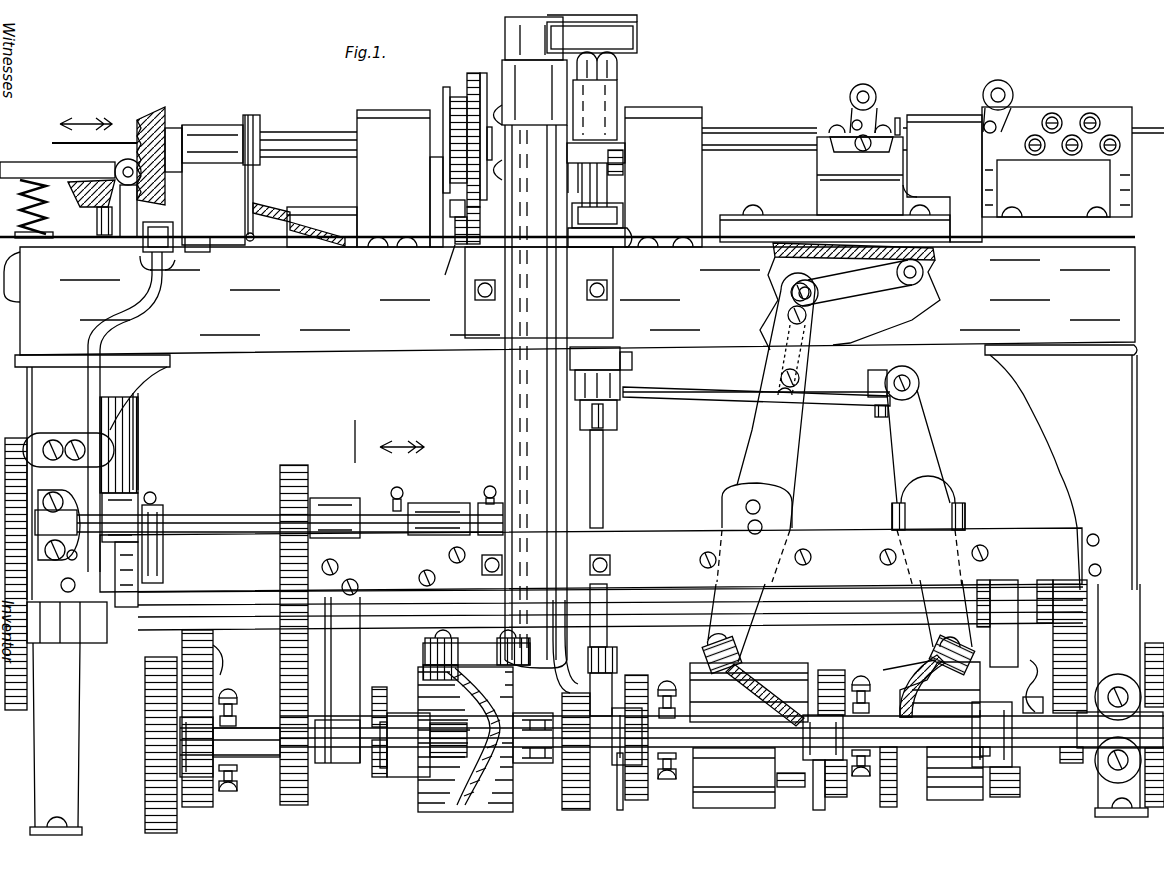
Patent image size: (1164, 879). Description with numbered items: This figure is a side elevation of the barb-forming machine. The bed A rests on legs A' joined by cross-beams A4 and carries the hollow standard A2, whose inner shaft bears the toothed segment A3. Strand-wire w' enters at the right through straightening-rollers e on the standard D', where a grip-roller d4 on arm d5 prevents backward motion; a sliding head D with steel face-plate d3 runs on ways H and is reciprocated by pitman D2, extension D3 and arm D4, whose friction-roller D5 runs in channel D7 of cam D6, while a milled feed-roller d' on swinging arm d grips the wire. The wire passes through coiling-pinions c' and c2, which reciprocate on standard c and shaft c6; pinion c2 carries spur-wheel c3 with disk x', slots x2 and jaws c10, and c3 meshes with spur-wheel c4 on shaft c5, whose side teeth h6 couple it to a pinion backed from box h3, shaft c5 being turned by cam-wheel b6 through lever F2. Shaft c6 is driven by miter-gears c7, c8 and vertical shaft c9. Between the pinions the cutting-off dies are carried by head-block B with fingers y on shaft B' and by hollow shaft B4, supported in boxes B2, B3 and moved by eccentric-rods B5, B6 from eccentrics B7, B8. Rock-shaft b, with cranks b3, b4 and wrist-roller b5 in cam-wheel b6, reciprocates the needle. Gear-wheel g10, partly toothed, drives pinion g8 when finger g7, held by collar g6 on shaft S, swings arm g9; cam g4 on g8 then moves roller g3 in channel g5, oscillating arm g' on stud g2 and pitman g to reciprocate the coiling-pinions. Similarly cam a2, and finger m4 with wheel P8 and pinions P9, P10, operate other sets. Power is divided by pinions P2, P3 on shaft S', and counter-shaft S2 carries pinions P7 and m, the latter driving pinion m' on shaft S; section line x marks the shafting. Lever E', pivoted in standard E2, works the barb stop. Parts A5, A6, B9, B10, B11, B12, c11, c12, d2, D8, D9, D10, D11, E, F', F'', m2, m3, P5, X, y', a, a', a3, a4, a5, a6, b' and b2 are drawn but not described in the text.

The frame or bed A is at (567, 296).
The legs A' is at (576, 472).
The hollow standard A2 is at (534, 342).
The toothed segment A3 is at (592, 34).
The cross-beams A4 is at (591, 561).
The lower bracket A5 is at (461, 647).
The frame bracket A6 is at (342, 620).
The head-block B is at (604, 107).
The shaft B' is at (614, 185).
The box B2 is at (600, 238).
The box B3 is at (628, 360).
The hollow shaft B4 is at (575, 385).
The eccentric-rod B5 is at (603, 462).
The eccentric-rod B6 is at (578, 672).
The eccentric B7 is at (617, 668).
The eccentric B8 is at (563, 778).
The hub B9 is at (627, 736).
The disc B10 is at (617, 790).
The gear B11 is at (648, 795).
The bolt B12 is at (670, 722).
The standard c is at (529, 177).
The coiling-pinion c' is at (616, 172).
The coiling-pinion c2 is at (452, 92).
The spur-wheel c3 is at (473, 129).
The spur-wheel c4 is at (459, 222).
The shaft c5 is at (378, 230).
The shaft c6 is at (293, 168).
The miter-gear c7 is at (170, 110).
The miter-gear c8 is at (91, 208).
The vertical shaft c9 is at (160, 460).
The jaws c10 is at (492, 145).
The bearing block c11 is at (944, 178).
The box c12 is at (213, 180).
The swinging arm d is at (863, 108).
The feed-roller d' is at (834, 112).
The post d2 is at (903, 116).
The face-plate d3 is at (861, 143).
The grip-roller d4 is at (984, 106).
The arm d5 is at (1013, 103).
The sliding head D is at (867, 176).
The standard D' is at (1057, 162).
The pitman D2 is at (840, 278).
The arm extension D3 is at (812, 306).
The arm D4 is at (761, 467).
The friction-roller D5 is at (706, 645).
The cam D6 is at (758, 695).
The cam channel D7 is at (773, 650).
The hub D8 is at (823, 762).
The disc D9 is at (825, 808).
The bolt D10 is at (868, 726).
The gear D11 is at (830, 670).
The straightening-rollers e is at (1048, 170).
The spring E is at (27, 209).
The lever E' is at (70, 172).
The standard E2 is at (128, 211).
The block F' is at (158, 238).
The block F'' is at (197, 243).
The lever F2 is at (170, 298).
The pitman g is at (756, 402).
The arm g' is at (920, 506).
The stud g2 is at (928, 503).
The friction-roller g3 is at (929, 655).
The cam g4 is at (940, 689).
The cam-channel g5 is at (905, 672).
The collar g6 is at (992, 734).
The finger g7 is at (978, 752).
The pinion g8 is at (1020, 778).
The arm g9 is at (1037, 686).
The gear-wheel g10 is at (1015, 623).
The box h3 is at (322, 219).
The coupling teeth h6 is at (448, 266).
The ways H is at (835, 220).
The pinion m is at (267, 587).
The pinion m' is at (263, 715).
The bolt head m2 is at (245, 707).
The block m3 is at (196, 747).
The finger m4 is at (240, 780).
The pinion P2 is at (1113, 700).
The pinion P3 is at (1053, 642).
The gear P5 is at (294, 623).
The pinion P7 is at (32, 696).
The partially-toothed wheel P8 is at (230, 655).
The pinion P9 is at (215, 686).
The pinion P10 is at (150, 768).
The shaft S is at (672, 735).
The shaft S' is at (664, 713).
The counter-shaft S2 is at (215, 630).
The strand-wire w' is at (608, 137).
The section line x is at (533, 727).
The disk x' is at (489, 129).
The slots x2 is at (537, 118).
The reference line X is at (354, 431).
The fingers y is at (257, 178).
The rack y' is at (272, 206).
The collar a is at (406, 659).
The collar a' is at (416, 671).
The cam a2 is at (465, 739).
The cam groove a3 is at (473, 736).
The hub a4 is at (423, 745).
The bolt a5 is at (366, 740).
The bolt a6 is at (379, 777).
The rock-shaft b is at (269, 510).
The screw b' is at (407, 496).
The block b2 is at (439, 519).
The crank b3 is at (488, 503).
The crank b4 is at (163, 560).
The wrist-roller b5 is at (155, 582).
The cam-wheel b6 is at (67, 562).